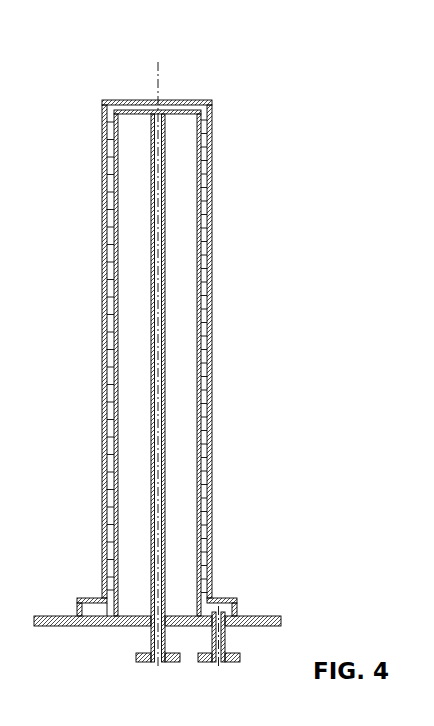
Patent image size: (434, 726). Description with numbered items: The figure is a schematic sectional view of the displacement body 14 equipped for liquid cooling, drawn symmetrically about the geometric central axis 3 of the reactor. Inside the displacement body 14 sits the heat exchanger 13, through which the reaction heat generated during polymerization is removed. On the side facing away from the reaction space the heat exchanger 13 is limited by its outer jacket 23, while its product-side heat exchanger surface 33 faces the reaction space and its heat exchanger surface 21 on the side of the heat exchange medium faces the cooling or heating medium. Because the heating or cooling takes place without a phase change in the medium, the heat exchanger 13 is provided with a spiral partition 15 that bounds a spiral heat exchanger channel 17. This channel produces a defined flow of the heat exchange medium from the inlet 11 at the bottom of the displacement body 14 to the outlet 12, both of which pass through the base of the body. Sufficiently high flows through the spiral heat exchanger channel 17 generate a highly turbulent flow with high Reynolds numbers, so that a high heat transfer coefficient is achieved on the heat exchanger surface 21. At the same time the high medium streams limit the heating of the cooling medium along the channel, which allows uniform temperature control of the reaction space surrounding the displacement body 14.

The geometric central axis 3 is at (155, 90).
The inlet for heat exchange medium 11 is at (228, 655).
The outlet for heat exchange medium 12 is at (150, 657).
The heat exchanger in the displacement body 13 is at (108, 498).
The displacement body 14 is at (121, 103).
The spiral partition 15 is at (203, 180).
The spiral heat exchanger channel 17 is at (204, 225).
The heat exchanger surface on the heat exchange medium side 21 is at (105, 532).
The outer jacket of the heat exchanger 23 is at (113, 447).
The heat exchanger surface on the product side 33 is at (106, 403).